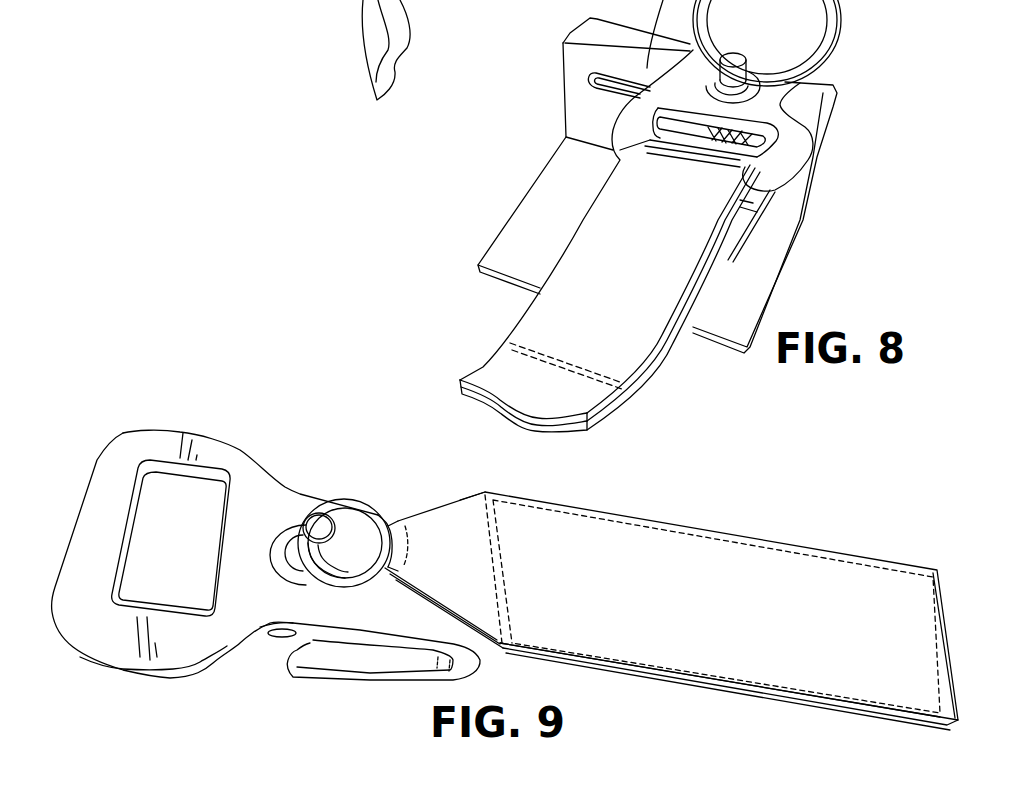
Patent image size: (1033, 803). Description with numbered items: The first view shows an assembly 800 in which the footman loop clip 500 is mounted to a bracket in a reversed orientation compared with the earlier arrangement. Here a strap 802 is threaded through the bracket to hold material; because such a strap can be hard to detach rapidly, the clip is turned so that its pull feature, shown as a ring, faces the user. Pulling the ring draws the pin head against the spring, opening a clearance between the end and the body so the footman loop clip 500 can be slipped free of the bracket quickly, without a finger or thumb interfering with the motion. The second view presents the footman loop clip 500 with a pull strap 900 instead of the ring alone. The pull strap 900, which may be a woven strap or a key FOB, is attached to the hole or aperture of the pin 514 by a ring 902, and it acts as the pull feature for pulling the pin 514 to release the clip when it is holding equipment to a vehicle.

In FIG. 8, the assembly 800 is at (866, 76).
In FIG. 8, the strap 802 is at (553, 345).
In FIG. 9, the footman loop clip 500 is at (265, 420).
In FIG. 9, the pin 514 is at (305, 519).
In FIG. 9, the ring 902 is at (361, 506).
In FIG. 9, the pull strap 900 is at (873, 580).